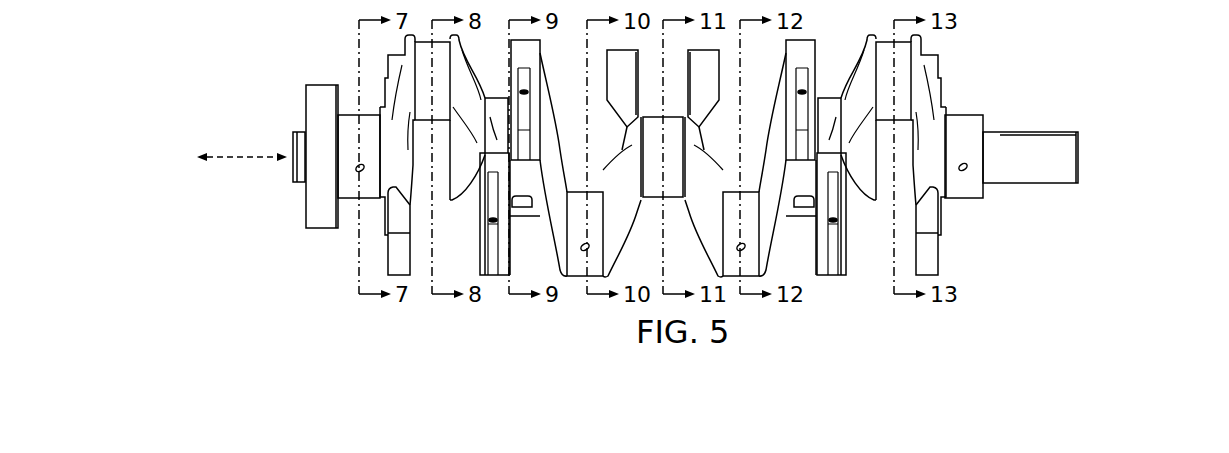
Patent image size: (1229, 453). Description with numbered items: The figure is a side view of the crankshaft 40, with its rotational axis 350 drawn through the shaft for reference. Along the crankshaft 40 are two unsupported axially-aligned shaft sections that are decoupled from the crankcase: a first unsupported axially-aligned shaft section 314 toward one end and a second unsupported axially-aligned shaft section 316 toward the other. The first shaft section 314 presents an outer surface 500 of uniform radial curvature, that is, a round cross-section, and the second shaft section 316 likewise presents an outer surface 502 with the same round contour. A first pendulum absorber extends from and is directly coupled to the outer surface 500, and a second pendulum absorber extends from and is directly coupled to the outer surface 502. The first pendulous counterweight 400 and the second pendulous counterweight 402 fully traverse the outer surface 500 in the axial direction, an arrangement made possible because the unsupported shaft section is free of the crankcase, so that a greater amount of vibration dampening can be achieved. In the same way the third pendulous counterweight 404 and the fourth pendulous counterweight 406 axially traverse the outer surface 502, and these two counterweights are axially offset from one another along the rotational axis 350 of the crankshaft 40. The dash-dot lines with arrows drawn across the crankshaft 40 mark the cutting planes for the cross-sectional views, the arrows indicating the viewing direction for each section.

The crankshaft 40 is at (1147, 152).
The rotational axis 350 is at (246, 146).
The first unsupported axially-aligned shaft section 314 is at (828, 91).
The second unsupported axially-aligned shaft section 316 is at (499, 91).
The first pendulous counterweight 400 is at (838, 239).
The second pendulous counterweight 402 is at (791, 50).
The third pendulous counterweight 404 is at (533, 50).
The fourth pendulous counterweight 406 is at (484, 266).
The outer surface 500 is at (836, 135).
The outer surface 502 is at (492, 125).